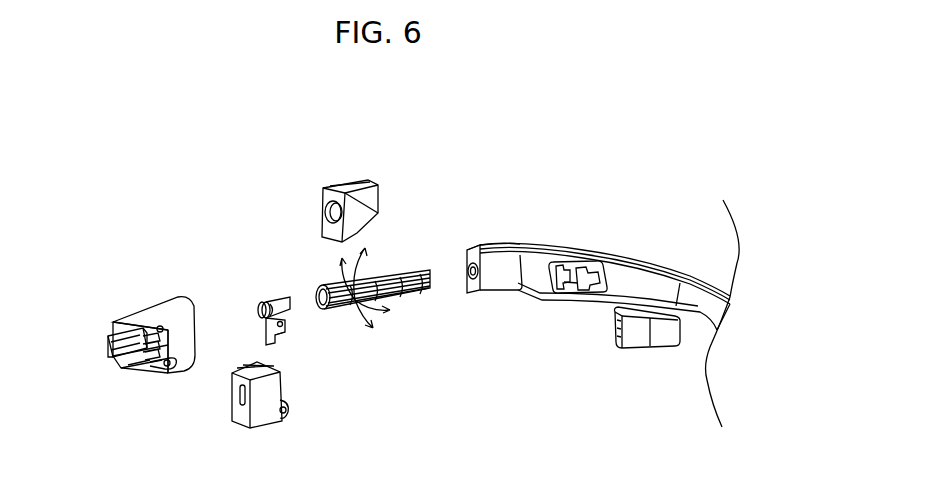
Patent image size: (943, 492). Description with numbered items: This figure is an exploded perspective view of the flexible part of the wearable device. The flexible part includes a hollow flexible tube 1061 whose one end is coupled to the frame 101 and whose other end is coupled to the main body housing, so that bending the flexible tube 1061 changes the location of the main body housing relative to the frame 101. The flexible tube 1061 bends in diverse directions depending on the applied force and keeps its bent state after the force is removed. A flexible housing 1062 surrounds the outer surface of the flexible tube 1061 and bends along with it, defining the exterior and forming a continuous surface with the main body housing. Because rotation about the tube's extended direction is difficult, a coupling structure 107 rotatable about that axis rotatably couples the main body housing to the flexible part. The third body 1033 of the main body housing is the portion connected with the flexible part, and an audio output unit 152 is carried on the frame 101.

The frame 101 is at (525, 243).
The coupling structure 107 is at (263, 304).
The audio output unit 152 is at (665, 335).
The third body 1033 is at (232, 412).
The flexible tube 1061 is at (420, 293).
The flexible housing 1062 is at (339, 188).